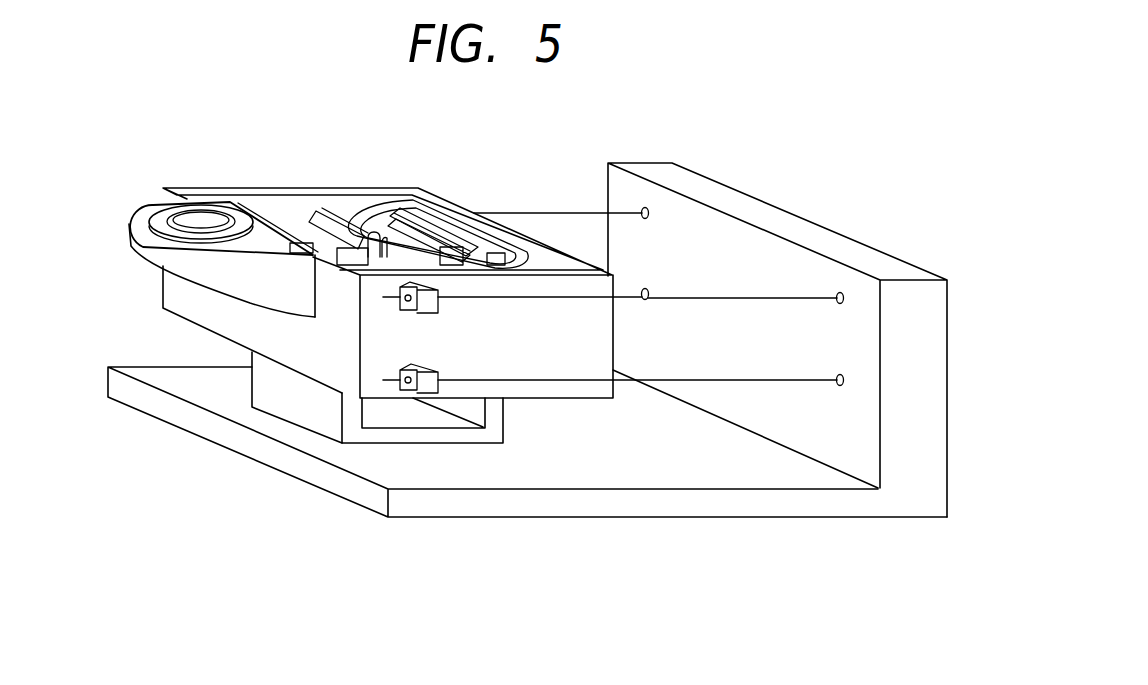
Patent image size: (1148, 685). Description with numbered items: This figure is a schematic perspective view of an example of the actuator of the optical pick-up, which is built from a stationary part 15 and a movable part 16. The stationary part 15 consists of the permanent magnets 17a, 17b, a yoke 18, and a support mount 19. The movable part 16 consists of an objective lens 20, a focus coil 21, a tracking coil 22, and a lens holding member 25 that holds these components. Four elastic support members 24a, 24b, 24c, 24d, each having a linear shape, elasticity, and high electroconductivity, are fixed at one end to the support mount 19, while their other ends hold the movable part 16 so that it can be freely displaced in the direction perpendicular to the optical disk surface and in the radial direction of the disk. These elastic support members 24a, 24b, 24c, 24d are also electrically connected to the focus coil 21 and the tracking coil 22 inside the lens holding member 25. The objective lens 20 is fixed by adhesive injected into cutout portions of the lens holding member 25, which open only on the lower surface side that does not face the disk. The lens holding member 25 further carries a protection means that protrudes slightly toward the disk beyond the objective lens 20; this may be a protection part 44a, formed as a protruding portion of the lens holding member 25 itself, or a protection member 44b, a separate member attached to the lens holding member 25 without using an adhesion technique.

The stationary part 15 is at (565, 536).
The movable part 16 is at (142, 291).
The permanent magnet 17a is at (317, 226).
The permanent magnet 17b is at (437, 237).
The yoke 18 is at (322, 415).
The support mount 19 is at (457, 500).
The objective lens 20 is at (214, 213).
The focus coil 21 is at (403, 210).
The tracking coil 22 is at (378, 247).
The elastic support member 24a is at (546, 212).
The elastic support member 24b is at (786, 292).
The elastic support member 24c is at (631, 291).
The elastic support member 24d is at (775, 381).
The lens holding member 25 is at (220, 313).
The protection part 44a is at (153, 207).
The protection member 44b is at (222, 216).